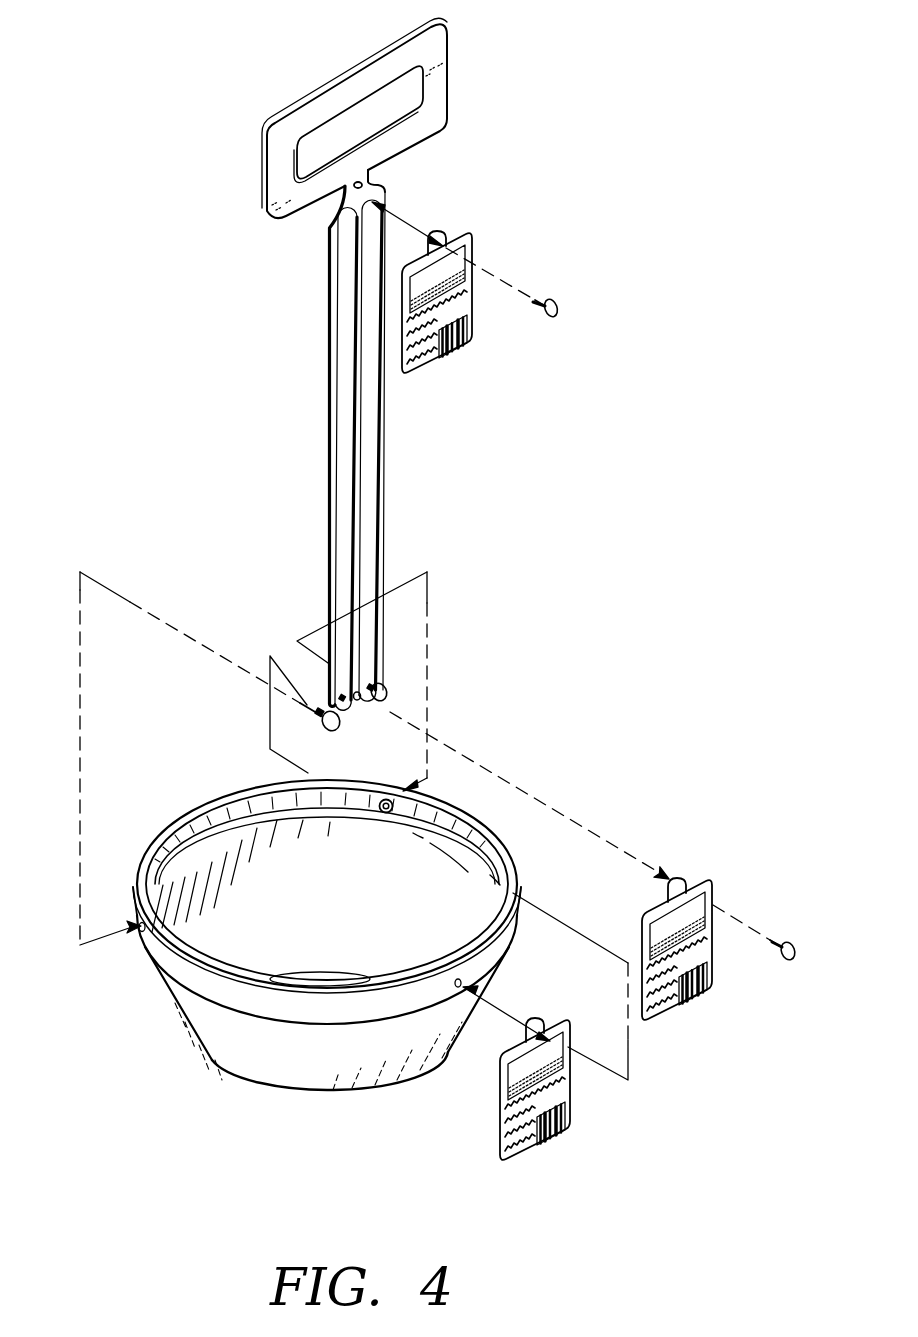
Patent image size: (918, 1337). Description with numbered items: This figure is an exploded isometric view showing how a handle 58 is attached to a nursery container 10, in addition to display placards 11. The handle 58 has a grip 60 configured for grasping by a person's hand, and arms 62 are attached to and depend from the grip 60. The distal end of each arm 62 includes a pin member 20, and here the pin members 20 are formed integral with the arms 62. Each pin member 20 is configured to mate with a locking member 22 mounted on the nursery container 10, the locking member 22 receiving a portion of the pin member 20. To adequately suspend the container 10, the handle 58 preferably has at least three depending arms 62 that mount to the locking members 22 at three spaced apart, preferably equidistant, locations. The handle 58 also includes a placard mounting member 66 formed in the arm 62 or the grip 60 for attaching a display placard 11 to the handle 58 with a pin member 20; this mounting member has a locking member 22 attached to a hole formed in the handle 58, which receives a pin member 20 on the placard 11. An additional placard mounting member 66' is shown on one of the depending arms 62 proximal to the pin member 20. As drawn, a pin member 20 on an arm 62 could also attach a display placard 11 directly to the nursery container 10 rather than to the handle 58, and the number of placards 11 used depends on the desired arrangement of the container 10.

The nursery container 10 is at (140, 1024).
The display placard 11 is at (474, 235).
The pin member 20 is at (560, 309).
The locking member 22 is at (388, 813).
The handle 58 is at (285, 262).
The grip 60 is at (430, 44).
The arm 62 is at (386, 506).
The placard mounting member 66 is at (423, 162).
The additional placard mounting member 66' is at (290, 658).